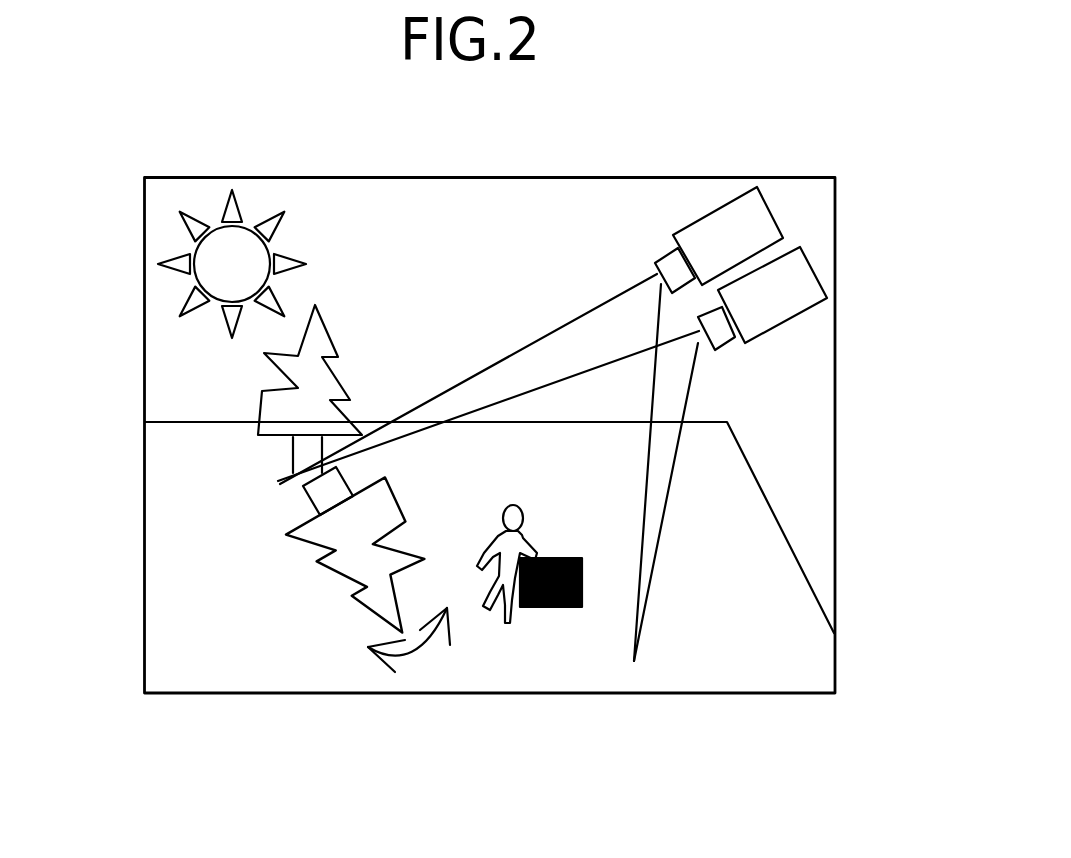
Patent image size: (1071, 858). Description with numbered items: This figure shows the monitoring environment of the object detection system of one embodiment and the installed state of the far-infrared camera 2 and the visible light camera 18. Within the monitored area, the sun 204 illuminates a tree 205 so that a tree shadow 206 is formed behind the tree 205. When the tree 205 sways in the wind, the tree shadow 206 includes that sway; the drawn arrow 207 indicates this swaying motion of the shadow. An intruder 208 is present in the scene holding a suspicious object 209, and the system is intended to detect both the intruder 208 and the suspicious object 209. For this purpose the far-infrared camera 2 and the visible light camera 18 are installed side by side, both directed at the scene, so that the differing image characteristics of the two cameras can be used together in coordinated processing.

The far-infrared camera 2 is at (772, 208).
The visible light camera 18 is at (811, 262).
The sun 204 is at (227, 202).
The tree 205 is at (273, 377).
The tree shadow 206 is at (333, 580).
The swing direction arrow 207 is at (410, 655).
The intruder 208 is at (486, 612).
The suspicious object 209 is at (566, 608).